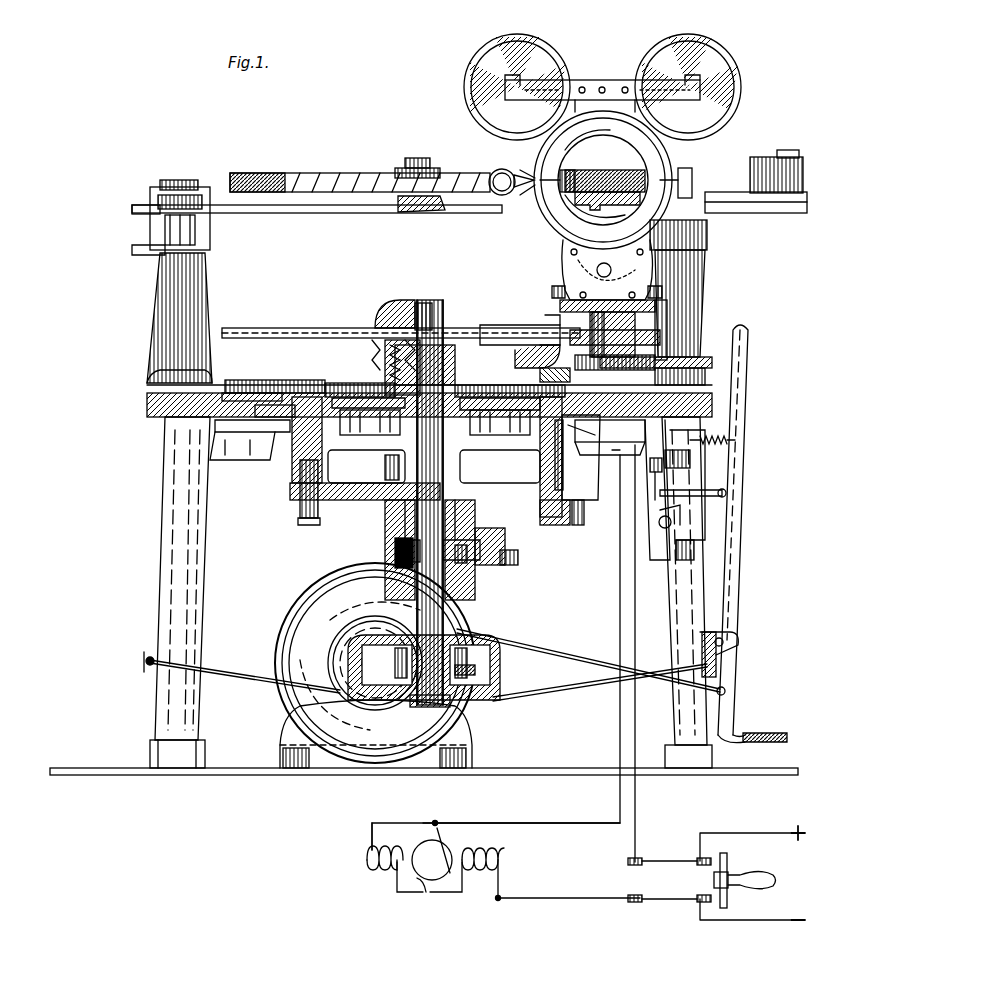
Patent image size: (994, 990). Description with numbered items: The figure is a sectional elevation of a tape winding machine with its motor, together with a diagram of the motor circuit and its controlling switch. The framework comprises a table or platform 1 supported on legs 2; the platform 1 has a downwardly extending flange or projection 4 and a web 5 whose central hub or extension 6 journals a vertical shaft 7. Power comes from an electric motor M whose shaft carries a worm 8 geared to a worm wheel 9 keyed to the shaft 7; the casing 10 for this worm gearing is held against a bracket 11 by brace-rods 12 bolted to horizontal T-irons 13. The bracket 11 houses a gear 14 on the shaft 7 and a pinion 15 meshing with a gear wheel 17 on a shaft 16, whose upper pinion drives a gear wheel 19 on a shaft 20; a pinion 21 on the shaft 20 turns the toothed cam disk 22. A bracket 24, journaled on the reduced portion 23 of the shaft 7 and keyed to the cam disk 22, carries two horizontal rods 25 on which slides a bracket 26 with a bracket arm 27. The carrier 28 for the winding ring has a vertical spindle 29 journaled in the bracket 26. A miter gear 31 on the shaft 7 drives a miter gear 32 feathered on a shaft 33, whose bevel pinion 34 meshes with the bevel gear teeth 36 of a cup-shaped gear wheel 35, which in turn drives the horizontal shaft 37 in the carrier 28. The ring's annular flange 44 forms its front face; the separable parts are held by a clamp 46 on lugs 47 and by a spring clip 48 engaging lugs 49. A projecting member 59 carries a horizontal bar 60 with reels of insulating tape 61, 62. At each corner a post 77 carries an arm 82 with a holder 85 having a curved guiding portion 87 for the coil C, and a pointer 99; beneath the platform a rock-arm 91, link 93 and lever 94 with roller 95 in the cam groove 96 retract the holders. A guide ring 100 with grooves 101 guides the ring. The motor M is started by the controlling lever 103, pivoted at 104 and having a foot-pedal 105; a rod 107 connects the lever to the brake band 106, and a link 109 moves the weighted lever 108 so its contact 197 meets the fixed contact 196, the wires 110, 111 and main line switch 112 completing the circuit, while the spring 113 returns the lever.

The table or platform 1 is at (150, 400).
The legs 2 is at (165, 570).
The flange or projection 4 is at (300, 468).
The web 5 is at (366, 440).
The central hub or extension 6 is at (395, 515).
The vertical shaft 7 is at (440, 605).
The worm 8 is at (372, 665).
The worm wheel 9 is at (470, 665).
The casing 10 is at (495, 650).
The bracket 11 is at (345, 498).
The brace-rods 12 is at (240, 690).
The horizontal T-irons 13 is at (146, 660).
The gear 14 is at (400, 558).
The pinion 15 is at (480, 568).
The shaft 16 is at (500, 540).
The gear wheel 17 is at (508, 563).
The gear wheel 19 is at (582, 500).
The shaft 20 is at (565, 478).
The pinion 21 is at (575, 440).
The cam disk 22 is at (352, 392).
The reduced portion 23 is at (395, 385).
The bracket 24 is at (380, 326).
The horizontal rods 25 is at (672, 358).
The bracket 26 is at (615, 350).
The bracket arm 27 is at (548, 330).
The carrier 28 is at (568, 245).
The vertical spindle or shaft 29 is at (665, 312).
The miter gear 31 is at (443, 340).
The miter gear 32 is at (432, 312).
The shaft 33 is at (278, 328).
The bevel pinion 34 is at (570, 315).
The cup-shaped gear wheel 35 is at (556, 292).
The bevel gear teeth 36 is at (675, 325).
The horizontal shaft 37 is at (609, 270).
The annular flange 44 is at (660, 170).
The clamp 46 is at (700, 172).
The lugs 47 is at (700, 180).
The clamping ring or clip 48 is at (496, 193).
The lugs or noses 49 is at (530, 172).
The projecting member 59 is at (610, 105).
The horizontal bar 60 is at (572, 85).
The reel of insulating tape 61 is at (688, 87).
The reel of insulating tape 62 is at (517, 87).
The corner post or standard 77 is at (172, 313).
The horizontal arm 82 is at (296, 215).
The holder or support 85 is at (405, 168).
The downwardly curved guiding portion 87 is at (400, 212).
The rock-arm 91 is at (240, 422).
The link 93 is at (268, 422).
The lever 94 is at (300, 420).
The anti-friction guide roller 95 is at (478, 400).
The cam groove 96 is at (380, 440).
The pointer 99 is at (150, 245).
The guide ring 100 is at (308, 386).
The grooves 101 is at (280, 385).
The controlling lever 103 is at (740, 540).
The pivot 104 is at (724, 643).
The foot-pedal 105 is at (762, 735).
The brake band 106 is at (352, 640).
The rod 107 is at (563, 654).
The weighted lever 108 is at (660, 510).
The link 109 is at (727, 493).
The wire 110 is at (615, 712).
The wire 111 is at (638, 705).
The main line switch 112 is at (678, 880).
The spring 113 is at (728, 440).
The fixed contact 196 is at (690, 458).
The contact 197 is at (652, 468).
The coil C is at (300, 180).
The electric motor M is at (318, 625).